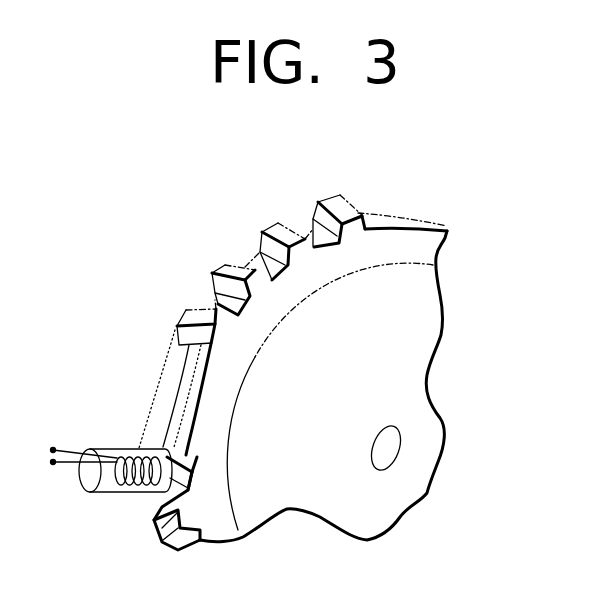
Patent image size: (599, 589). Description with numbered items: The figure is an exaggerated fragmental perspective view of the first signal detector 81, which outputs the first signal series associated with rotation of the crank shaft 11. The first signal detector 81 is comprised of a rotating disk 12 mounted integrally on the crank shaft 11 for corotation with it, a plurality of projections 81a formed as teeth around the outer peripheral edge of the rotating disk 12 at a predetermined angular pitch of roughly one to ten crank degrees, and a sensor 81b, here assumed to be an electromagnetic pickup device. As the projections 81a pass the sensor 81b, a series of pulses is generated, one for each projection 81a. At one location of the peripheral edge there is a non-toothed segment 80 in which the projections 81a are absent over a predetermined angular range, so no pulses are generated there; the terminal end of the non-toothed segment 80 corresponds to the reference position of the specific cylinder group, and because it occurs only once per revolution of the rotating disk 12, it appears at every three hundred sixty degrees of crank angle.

The non-toothed segment 80 is at (383, 220).
The first signal detector 81 is at (106, 566).
The projections 81a is at (221, 265).
The sensor 81b is at (102, 447).
The rotating disk 12 is at (413, 337).
The crank shaft 11 is at (410, 421).